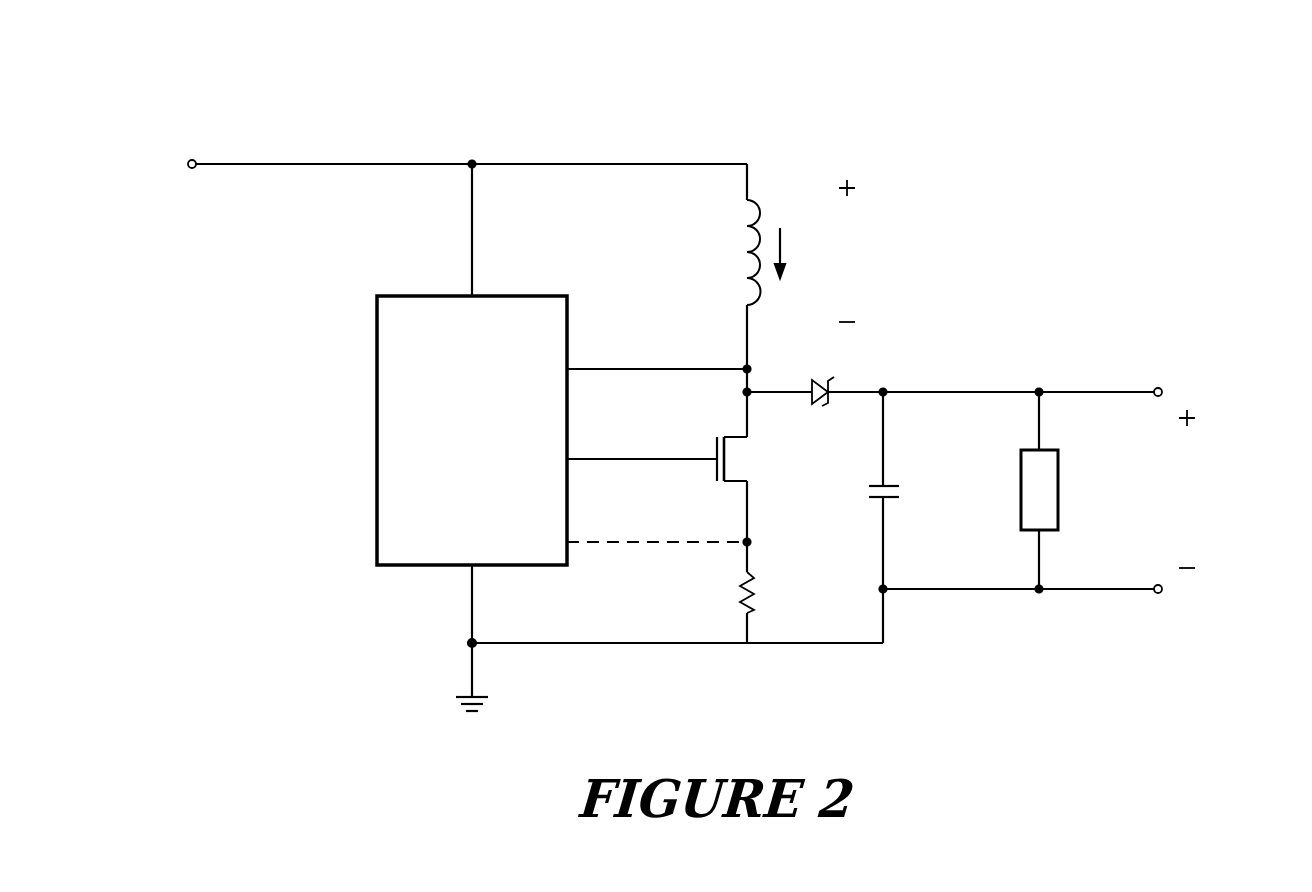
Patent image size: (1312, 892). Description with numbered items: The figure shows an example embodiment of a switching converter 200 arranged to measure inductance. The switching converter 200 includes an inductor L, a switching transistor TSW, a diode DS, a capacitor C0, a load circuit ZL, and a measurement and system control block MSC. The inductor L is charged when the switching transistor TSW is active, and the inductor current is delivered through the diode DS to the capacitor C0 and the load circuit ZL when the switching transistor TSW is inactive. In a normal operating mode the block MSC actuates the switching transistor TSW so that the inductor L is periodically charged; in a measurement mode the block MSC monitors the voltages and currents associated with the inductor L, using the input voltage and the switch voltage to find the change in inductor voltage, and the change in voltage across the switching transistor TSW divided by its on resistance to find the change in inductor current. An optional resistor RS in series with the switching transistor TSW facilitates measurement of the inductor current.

The switching converter 200 is at (1196, 111).
The measurement and system control block MSC is at (472, 430).
The inductor L is at (740, 252).
The switching transistor TSW is at (759, 461).
The resistor RS is at (766, 594).
The diode DS is at (810, 373).
The capacitor C0 is at (907, 497).
The load circuit ZL is at (1062, 490).